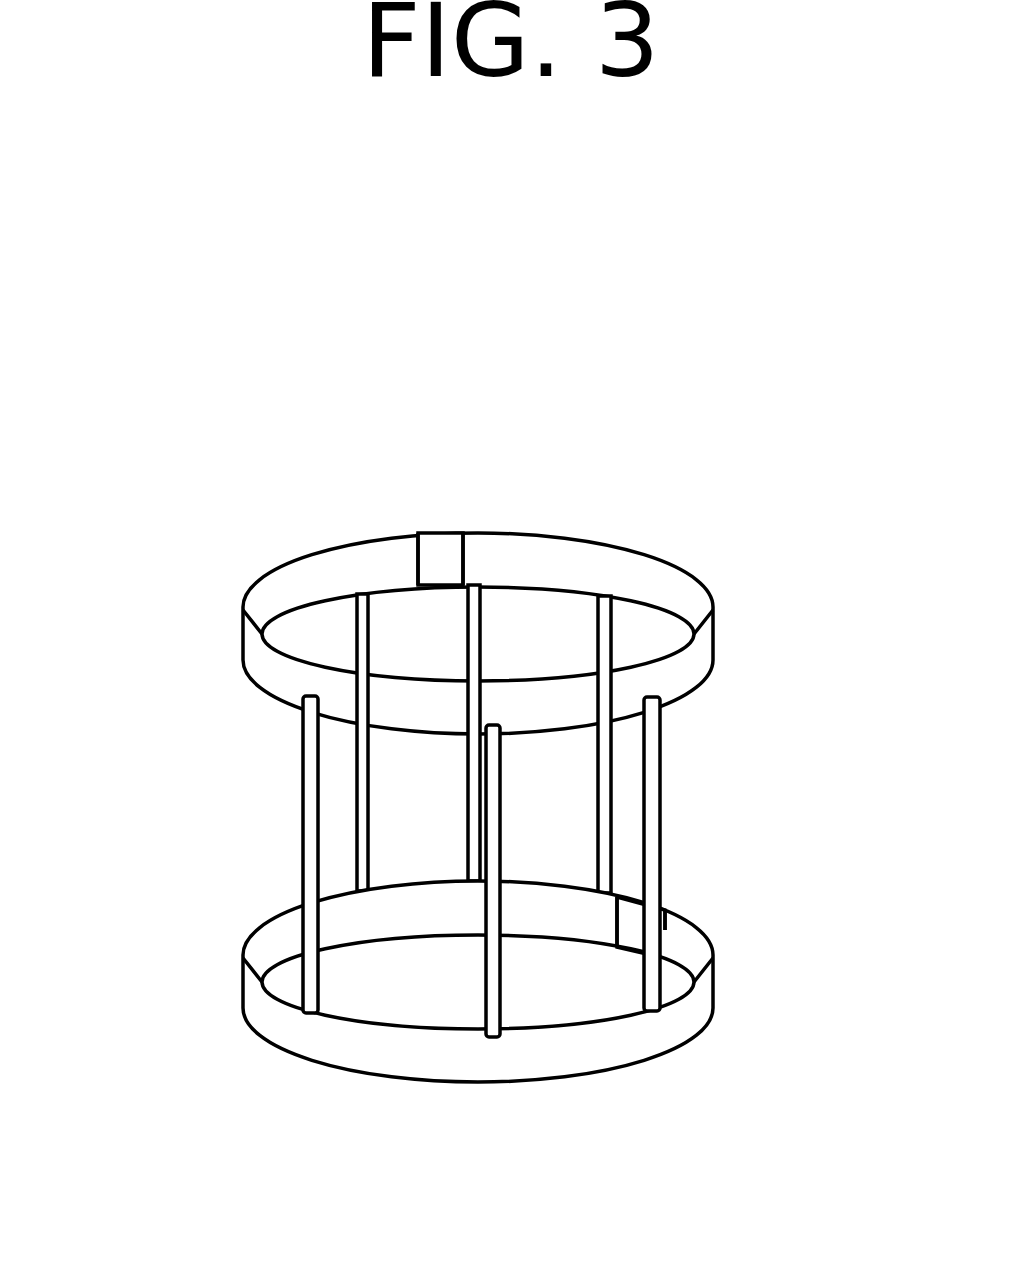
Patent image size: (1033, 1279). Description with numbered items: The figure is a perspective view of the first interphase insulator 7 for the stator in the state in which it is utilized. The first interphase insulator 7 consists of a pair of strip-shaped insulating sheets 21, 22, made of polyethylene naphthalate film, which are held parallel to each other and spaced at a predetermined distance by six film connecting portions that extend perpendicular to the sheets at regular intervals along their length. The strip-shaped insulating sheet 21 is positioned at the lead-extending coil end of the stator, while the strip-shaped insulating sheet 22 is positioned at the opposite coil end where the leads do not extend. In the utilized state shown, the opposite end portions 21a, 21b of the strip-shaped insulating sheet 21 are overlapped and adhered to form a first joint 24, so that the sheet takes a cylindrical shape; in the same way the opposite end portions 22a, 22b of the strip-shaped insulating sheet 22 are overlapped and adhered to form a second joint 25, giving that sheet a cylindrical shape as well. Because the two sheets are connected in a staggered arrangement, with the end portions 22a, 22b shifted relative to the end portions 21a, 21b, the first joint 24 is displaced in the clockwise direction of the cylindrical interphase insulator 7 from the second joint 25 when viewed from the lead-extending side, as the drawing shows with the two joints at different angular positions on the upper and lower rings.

The first interphase insulator 7 is at (310, 362).
The strip-shaped insulating sheet 21 is at (250, 613).
The end portion 21a is at (467, 565).
The end portion 21b is at (417, 557).
The strip-shaped insulating sheet 22 is at (250, 967).
The end portion 22a is at (672, 928).
The end portion 22b is at (617, 923).
The first joint 24 is at (442, 552).
The second joint 25 is at (642, 920).